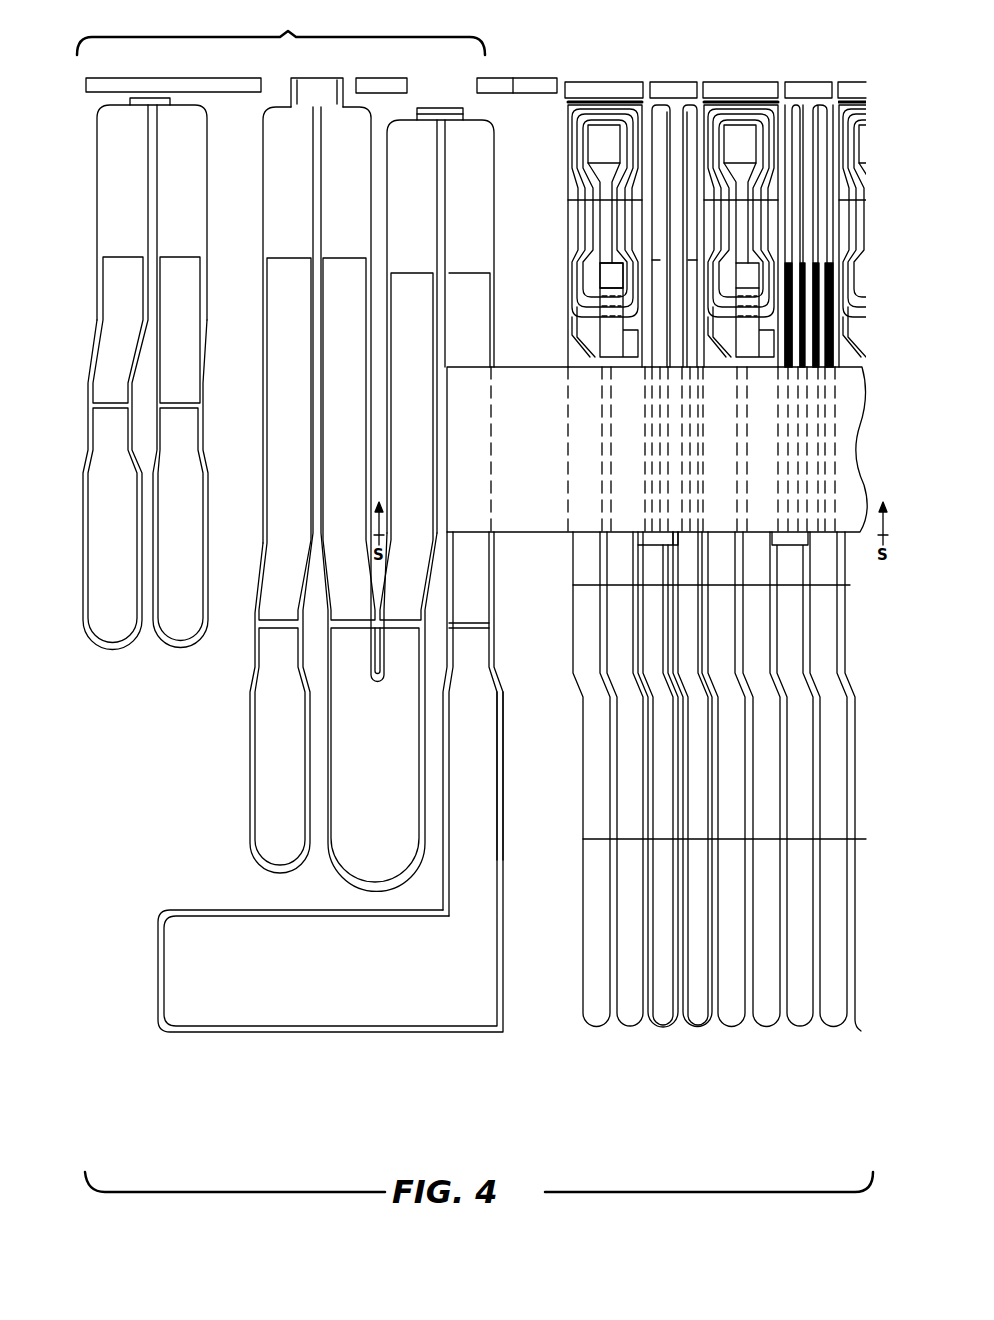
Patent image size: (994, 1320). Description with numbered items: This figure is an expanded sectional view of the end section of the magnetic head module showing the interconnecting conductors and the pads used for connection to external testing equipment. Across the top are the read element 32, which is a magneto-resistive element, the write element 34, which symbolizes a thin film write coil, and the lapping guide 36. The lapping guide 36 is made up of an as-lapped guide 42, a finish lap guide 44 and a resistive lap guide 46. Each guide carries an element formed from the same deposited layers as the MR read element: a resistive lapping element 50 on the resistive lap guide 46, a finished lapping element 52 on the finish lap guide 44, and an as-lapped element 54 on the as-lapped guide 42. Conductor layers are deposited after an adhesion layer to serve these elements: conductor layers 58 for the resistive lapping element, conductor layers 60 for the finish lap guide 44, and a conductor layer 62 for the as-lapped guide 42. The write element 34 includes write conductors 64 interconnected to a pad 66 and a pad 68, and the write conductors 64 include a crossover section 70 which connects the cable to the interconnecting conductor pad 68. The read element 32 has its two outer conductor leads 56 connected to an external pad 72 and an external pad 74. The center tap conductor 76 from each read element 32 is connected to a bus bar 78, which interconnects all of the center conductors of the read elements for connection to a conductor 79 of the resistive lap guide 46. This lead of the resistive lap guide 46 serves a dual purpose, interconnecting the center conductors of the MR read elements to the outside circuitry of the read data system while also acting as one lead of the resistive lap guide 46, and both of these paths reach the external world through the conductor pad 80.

The read element 32 is at (672, 104).
The write element 34 is at (559, 154).
The lapping guide 36 is at (281, 51).
The as-lapped guide 42 is at (89, 148).
The finish lap guide 44 is at (283, 98).
The resistive lap guide 46 is at (409, 111).
The resistive lapping element 50 is at (437, 112).
The finished lapping element 52 is at (318, 92).
The as-lapped element 54 is at (150, 100).
The conductor layers 56 is at (645, 122).
The conductor layers 58 is at (428, 203).
The conductor layers 60 is at (330, 202).
The conductor layer 62 is at (140, 135).
The write conductors 64 is at (597, 170).
The pad 66 is at (595, 1022).
The pad 68 is at (633, 1022).
The crossover section 70 is at (605, 275).
The external pad 72 is at (667, 1022).
The external pad 74 is at (705, 1022).
The center tap conductor 76 is at (675, 140).
The bus bar 78 is at (850, 412).
The conductor 79 is at (485, 607).
The conductor pad 80 is at (232, 1010).